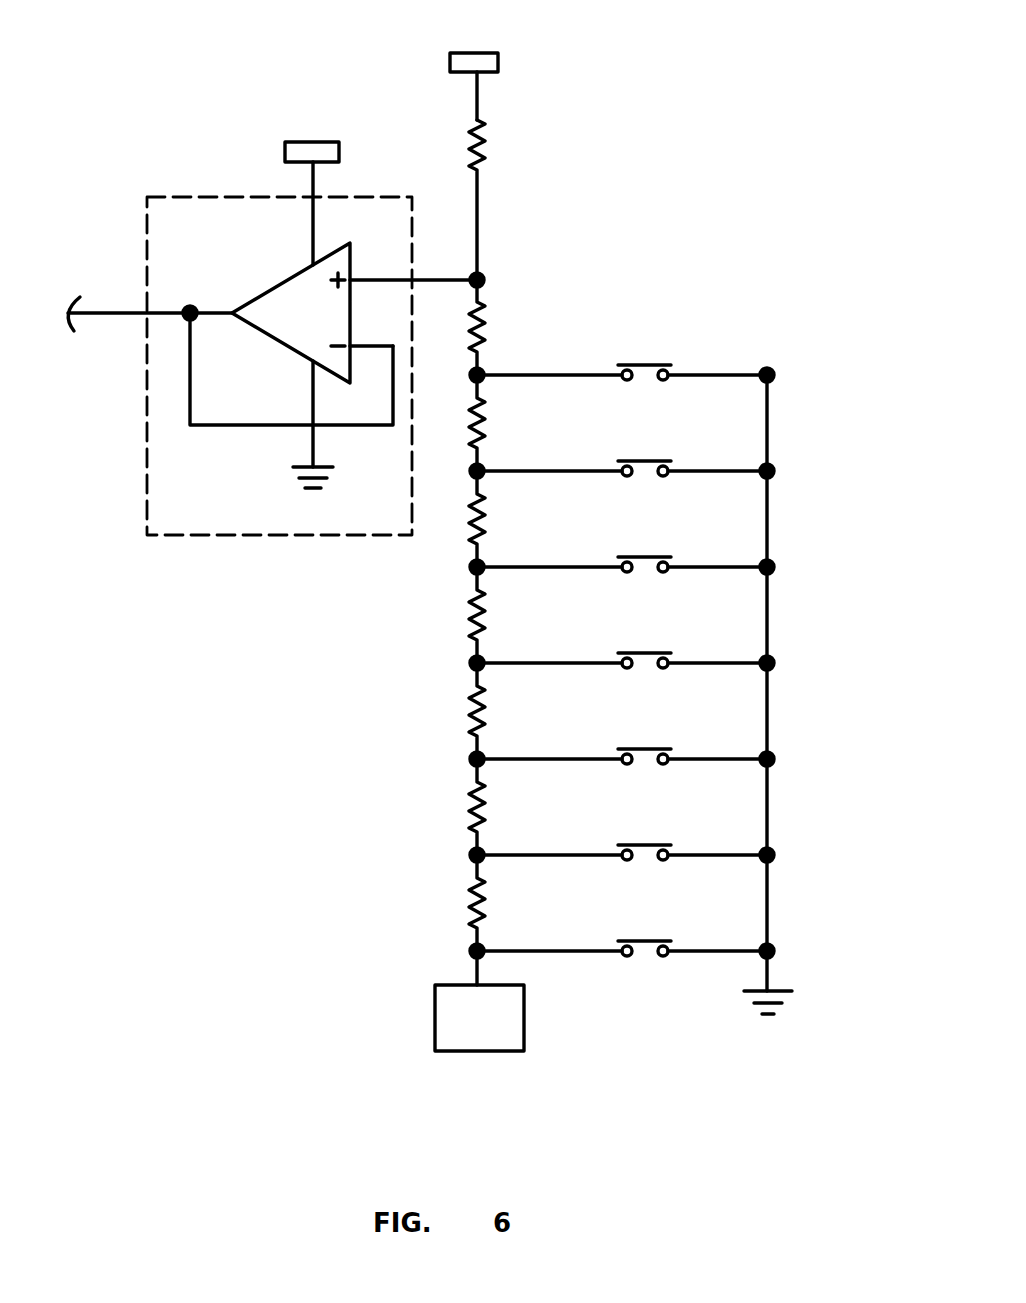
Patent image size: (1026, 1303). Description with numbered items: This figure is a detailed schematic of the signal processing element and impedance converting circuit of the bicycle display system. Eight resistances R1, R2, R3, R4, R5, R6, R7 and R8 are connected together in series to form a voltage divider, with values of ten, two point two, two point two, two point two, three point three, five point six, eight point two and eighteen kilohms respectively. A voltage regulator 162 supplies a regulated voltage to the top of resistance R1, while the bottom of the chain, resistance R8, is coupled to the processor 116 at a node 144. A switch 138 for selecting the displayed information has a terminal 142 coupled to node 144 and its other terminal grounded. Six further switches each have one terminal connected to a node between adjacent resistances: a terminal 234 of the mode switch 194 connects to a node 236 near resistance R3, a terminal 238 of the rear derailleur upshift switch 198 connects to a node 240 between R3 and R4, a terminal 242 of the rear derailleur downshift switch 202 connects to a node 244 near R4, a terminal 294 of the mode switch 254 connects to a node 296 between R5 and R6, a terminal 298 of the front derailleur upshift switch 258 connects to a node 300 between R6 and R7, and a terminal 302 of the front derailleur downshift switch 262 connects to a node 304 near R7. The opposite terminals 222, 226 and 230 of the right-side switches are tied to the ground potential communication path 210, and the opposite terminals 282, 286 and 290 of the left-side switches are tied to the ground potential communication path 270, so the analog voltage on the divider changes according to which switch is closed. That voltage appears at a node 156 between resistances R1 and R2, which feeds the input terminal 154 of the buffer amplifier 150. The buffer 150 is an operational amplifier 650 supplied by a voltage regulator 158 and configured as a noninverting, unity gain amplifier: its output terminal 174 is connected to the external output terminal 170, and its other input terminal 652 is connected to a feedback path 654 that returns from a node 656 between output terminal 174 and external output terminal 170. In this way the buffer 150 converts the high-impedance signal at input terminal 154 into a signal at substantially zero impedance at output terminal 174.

The voltage regulator 162 is at (458, 52).
The voltage regulator 158 is at (313, 142).
The input terminal 154 is at (425, 280).
The node 156 is at (483, 279).
The node 656 is at (190, 310).
The output terminal 174 is at (211, 312).
The external output terminal 170 is at (78, 318).
The input terminal 652 is at (370, 345).
The operational amplifier 650 is at (288, 347).
The feedback path 654 is at (222, 425).
The buffer amplifier 150 is at (202, 536).
The resistance R1 is at (486, 133).
The resistance R2 is at (486, 314).
The resistance R3 is at (486, 410).
The resistance R4 is at (486, 512).
The resistance R5 is at (486, 610).
The resistance R6 is at (486, 705).
The resistance R7 is at (486, 801).
The resistance R8 is at (486, 896).
The node 236 is at (471, 376).
The node 240 is at (471, 472).
The node 244 is at (473, 566).
The node 296 is at (473, 662).
The node 300 is at (473, 758).
The node 304 is at (473, 854).
The node 144 is at (473, 951).
The terminal 234 is at (553, 375).
The terminal 238 is at (575, 450).
The terminal 242 is at (568, 567).
The terminal 294 is at (572, 663).
The terminal 298 is at (570, 759).
The terminal 302 is at (574, 855).
The terminal 142 is at (576, 951).
The mode switch 194 is at (661, 364).
The rear derailleur upshift switch 198 is at (662, 460).
The rear derailleur downshift switch 202 is at (663, 556).
The mode switch 254 is at (663, 652).
The front derailleur upshift switch 258 is at (663, 748).
The front derailleur downshift switch 262 is at (663, 844).
The switch 138 is at (663, 940).
The terminal 222 is at (735, 375).
The terminal 226 is at (722, 471).
The terminal 230 is at (728, 567).
The terminal 282 is at (728, 663).
The terminal 286 is at (728, 759).
The terminal 290 is at (728, 855).
The ground potential communication path 210 is at (769, 921).
The ground potential communication path 270 is at (785, 683).
The processor 116 is at (525, 1015).